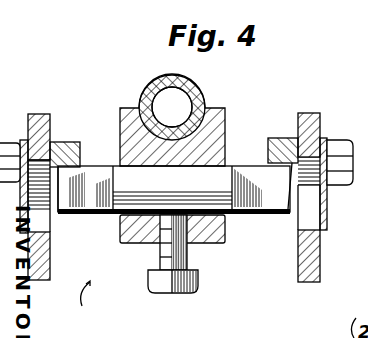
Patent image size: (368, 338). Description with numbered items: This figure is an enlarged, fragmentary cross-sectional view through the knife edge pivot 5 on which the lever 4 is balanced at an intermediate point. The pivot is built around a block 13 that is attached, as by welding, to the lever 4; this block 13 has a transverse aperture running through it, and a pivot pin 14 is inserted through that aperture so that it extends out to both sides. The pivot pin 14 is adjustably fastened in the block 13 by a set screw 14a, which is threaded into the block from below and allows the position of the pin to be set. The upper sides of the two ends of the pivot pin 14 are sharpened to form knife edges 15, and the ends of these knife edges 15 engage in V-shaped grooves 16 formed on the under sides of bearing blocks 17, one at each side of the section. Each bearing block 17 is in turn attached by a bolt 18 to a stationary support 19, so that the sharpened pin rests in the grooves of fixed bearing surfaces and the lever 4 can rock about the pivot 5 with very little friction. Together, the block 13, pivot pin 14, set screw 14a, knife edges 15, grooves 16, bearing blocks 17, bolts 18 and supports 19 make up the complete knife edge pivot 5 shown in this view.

The lever 4 is at (205, 93).
The knife edge pivot 5 is at (90, 302).
The block 13 is at (225, 241).
The pivot pin 14 is at (120, 214).
The set screw 14a is at (190, 262).
The knife edges 15 is at (101, 166).
The V-shaped grooves 16 is at (50, 214).
The bearing blocks 17 is at (69, 141).
The bolts 18 is at (12, 141).
The stationary supports 19 is at (45, 262).